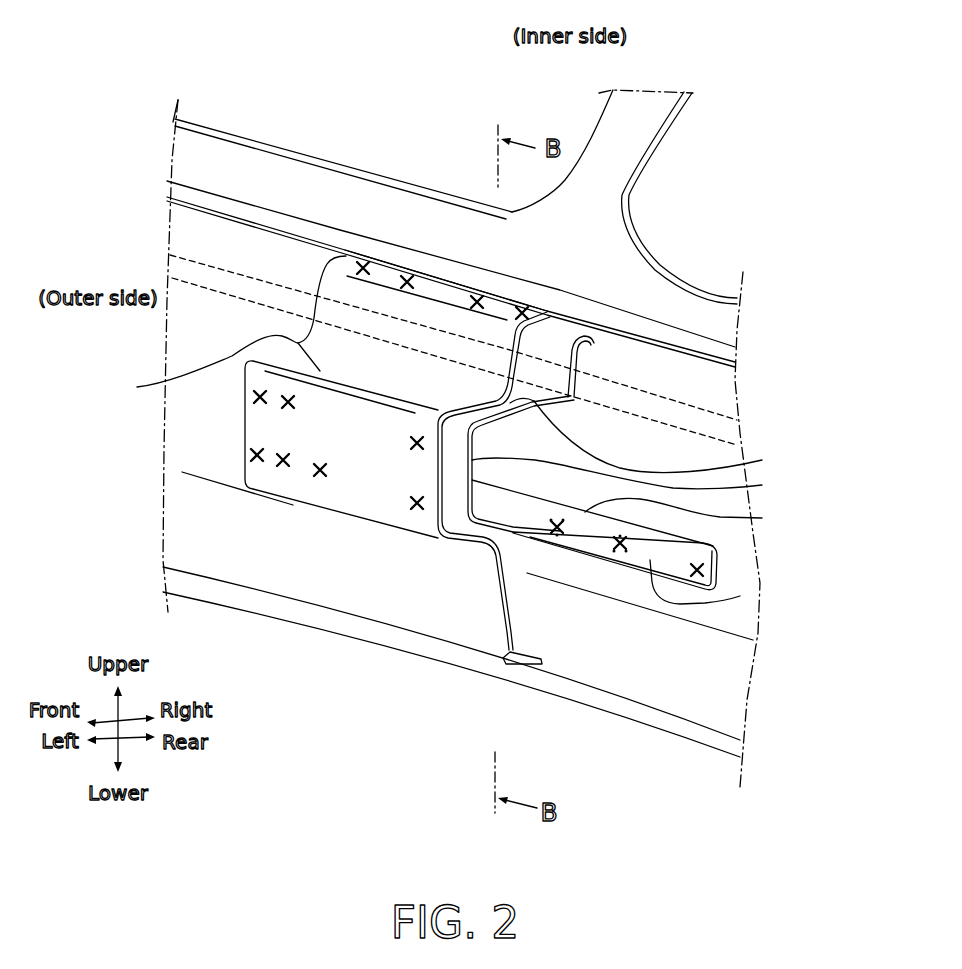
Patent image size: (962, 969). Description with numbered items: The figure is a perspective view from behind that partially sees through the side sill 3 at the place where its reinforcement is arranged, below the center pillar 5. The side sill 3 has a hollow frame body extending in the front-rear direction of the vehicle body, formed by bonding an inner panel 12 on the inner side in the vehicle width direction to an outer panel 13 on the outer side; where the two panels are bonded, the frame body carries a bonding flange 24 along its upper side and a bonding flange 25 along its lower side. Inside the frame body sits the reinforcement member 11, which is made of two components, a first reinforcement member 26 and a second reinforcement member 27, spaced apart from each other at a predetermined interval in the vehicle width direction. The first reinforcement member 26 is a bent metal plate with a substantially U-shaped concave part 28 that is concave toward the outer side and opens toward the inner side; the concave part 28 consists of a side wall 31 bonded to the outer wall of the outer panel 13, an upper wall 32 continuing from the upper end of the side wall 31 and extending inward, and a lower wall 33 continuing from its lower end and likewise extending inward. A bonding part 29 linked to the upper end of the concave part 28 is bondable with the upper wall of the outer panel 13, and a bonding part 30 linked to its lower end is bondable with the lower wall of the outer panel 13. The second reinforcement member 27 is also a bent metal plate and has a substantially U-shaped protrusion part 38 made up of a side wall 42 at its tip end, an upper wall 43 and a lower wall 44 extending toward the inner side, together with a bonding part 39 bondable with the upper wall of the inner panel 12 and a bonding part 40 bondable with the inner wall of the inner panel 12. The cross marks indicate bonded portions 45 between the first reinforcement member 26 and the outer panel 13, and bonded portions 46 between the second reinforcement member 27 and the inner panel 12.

The side sill 3 is at (174, 83).
The center pillar 5 is at (648, 126).
The reinforcement member 11 is at (500, 104).
The inner panel 12 is at (681, 657).
The outer panel 13 is at (209, 274).
The bonding flange 24 is at (252, 154).
The bonding flange 25 is at (267, 626).
The first reinforcement member 26 is at (443, 285).
The second reinforcement member 27 is at (571, 328).
The concave part 28 is at (97, 372).
The bonding part 29 is at (347, 285).
The bonding part 30 is at (528, 651).
The side wall 31 is at (262, 420).
The upper wall 32 is at (152, 388).
The lower wall 33 is at (277, 497).
The protrusion part 38 is at (822, 440).
The bonding part 39 is at (580, 330).
The bonding part 40 is at (725, 597).
The side wall 42 is at (762, 485).
The upper wall 43 is at (762, 460).
The lower wall 44 is at (762, 518).
The bonded portions 45 is at (405, 272).
The bonded portions 46 is at (616, 545).